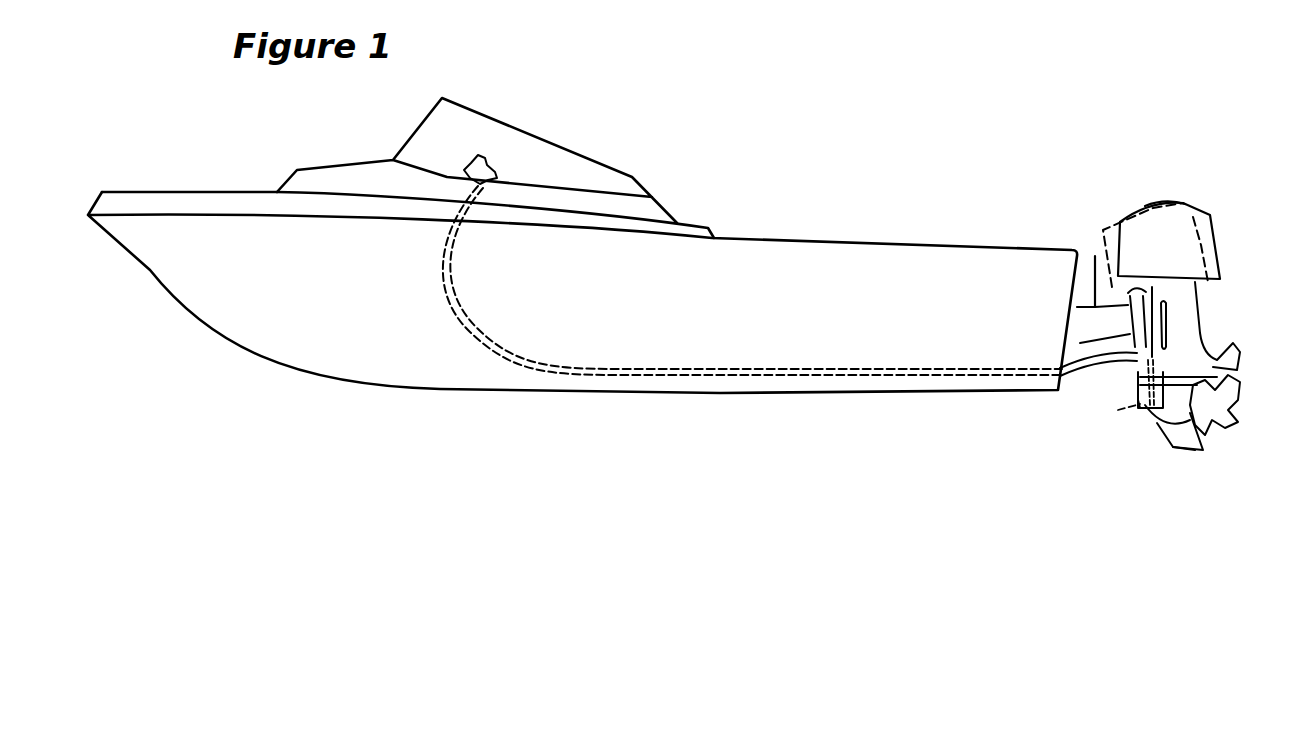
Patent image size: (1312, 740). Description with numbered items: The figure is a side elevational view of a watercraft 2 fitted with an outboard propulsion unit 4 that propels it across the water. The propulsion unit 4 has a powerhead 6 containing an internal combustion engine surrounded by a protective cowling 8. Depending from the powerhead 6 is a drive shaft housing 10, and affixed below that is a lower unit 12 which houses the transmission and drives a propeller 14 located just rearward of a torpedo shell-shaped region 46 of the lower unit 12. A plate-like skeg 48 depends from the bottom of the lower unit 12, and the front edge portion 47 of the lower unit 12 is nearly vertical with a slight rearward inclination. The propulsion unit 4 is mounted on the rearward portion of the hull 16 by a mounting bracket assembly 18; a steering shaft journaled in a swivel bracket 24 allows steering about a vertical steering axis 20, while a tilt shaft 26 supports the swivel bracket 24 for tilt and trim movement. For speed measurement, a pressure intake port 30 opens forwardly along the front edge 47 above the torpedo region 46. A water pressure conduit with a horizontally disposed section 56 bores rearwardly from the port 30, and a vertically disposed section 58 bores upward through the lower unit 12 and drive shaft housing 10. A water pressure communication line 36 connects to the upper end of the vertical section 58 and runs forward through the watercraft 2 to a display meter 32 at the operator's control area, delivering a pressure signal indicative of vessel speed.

The watercraft 2 is at (705, 110).
The outboard propulsion unit 4 is at (1216, 202).
The powerhead 6 is at (1162, 209).
The protective cowling 8 is at (1219, 245).
The drive shaft housing 10 is at (1207, 298).
The lower unit 12 is at (1207, 390).
The propeller 14 is at (1205, 438).
The hull 16 is at (817, 243).
The mounting bracket assembly 18 is at (1096, 300).
The steering axis 20 is at (1154, 297).
The swivel bracket 24 is at (1150, 327).
The tilt shaft 26 is at (1129, 292).
The pressure intake port 30 is at (1140, 402).
The display meter 32 is at (480, 153).
The water pressure communication line 36 is at (694, 368).
The torpedo shell-shaped region 46 is at (1173, 430).
The front edge portion 47 is at (1147, 404).
The skeg 48 is at (1183, 440).
The horizontally disposed section 56 is at (1118, 410).
The vertically disposed section 58 is at (1137, 388).